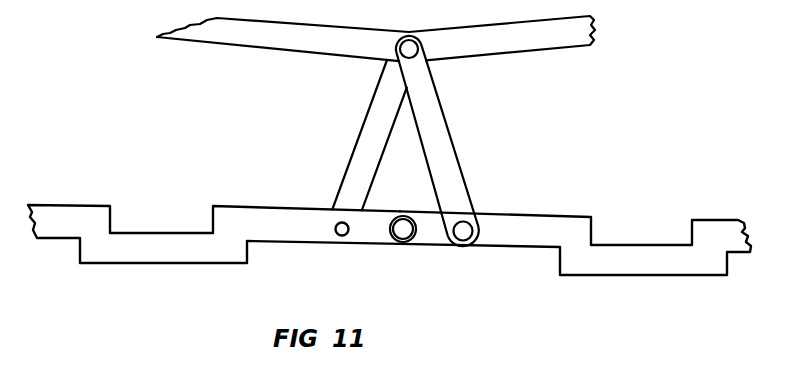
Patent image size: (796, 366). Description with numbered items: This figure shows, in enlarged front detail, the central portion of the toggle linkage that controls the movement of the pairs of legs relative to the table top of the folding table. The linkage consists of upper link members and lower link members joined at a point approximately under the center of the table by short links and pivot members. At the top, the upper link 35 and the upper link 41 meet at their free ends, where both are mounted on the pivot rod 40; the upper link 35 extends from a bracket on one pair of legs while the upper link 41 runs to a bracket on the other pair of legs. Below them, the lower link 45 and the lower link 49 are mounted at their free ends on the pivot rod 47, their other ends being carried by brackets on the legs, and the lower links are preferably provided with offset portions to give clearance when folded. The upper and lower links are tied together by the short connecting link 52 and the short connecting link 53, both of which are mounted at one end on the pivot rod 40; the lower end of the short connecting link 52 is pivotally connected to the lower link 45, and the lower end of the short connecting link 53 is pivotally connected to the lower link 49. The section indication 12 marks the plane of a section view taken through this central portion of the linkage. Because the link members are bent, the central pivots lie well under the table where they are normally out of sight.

The section line indicator 12- 12 is at (600, 52).
The upper link 35 is at (558, 37).
The pivot rod 40 is at (408, 47).
The upper link 41 is at (305, 38).
The lower link 45 is at (528, 232).
The pivot rod 47 is at (402, 228).
The lower link 49 is at (293, 232).
The short connecting link 52 is at (435, 135).
The short connecting link 53 is at (375, 132).